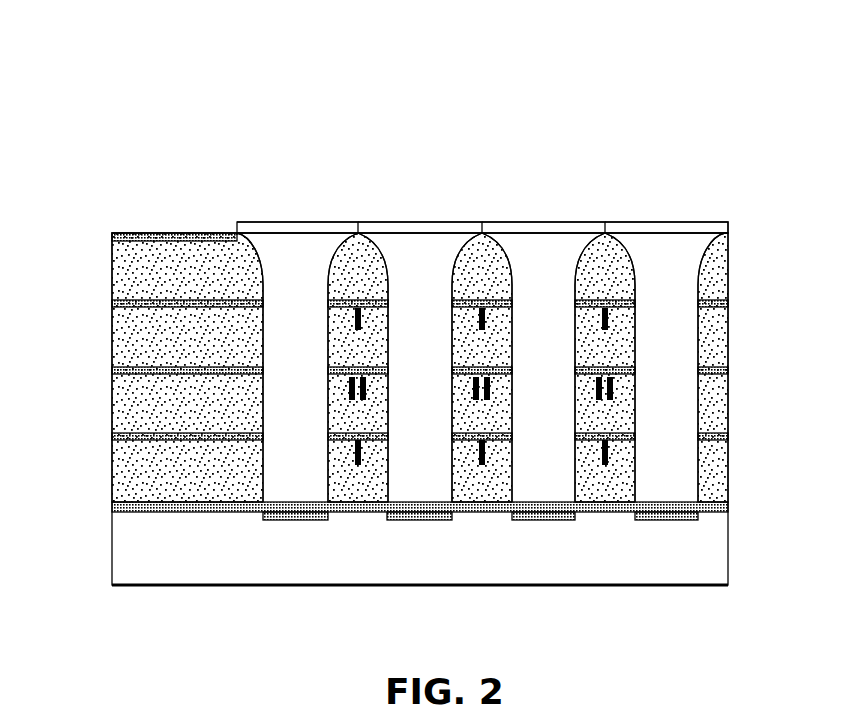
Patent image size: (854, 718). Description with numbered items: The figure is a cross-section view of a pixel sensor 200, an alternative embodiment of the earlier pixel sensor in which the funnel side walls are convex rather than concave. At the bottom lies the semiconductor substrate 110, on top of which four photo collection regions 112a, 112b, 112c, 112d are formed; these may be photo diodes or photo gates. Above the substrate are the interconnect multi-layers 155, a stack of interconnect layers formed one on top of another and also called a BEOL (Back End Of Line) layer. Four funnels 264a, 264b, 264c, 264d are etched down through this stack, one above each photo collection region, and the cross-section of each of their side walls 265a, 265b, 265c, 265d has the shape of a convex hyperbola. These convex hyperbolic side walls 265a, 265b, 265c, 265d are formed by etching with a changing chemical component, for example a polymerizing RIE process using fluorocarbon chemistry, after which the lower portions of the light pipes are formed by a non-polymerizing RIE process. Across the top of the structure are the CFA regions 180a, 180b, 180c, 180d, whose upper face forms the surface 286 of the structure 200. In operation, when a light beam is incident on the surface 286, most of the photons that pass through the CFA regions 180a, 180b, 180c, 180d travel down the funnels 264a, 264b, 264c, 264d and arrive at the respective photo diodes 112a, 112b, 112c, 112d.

The pixel sensor 200 is at (682, 104).
The semiconductor substrate 110 is at (122, 541).
The photo collection region 112a is at (272, 520).
The photo collection region 112b is at (407, 520).
The photo collection region 112c is at (545, 520).
The photo collection region 112d is at (668, 520).
The interconnect multi-layers 155 is at (753, 233).
The surface 286 is at (257, 222).
The CFA region 180a is at (291, 228).
The CFA region 180b is at (417, 228).
The CFA region 180c is at (572, 228).
The CFA region 180d is at (690, 228).
The funnel 264a is at (320, 305).
The funnel 264b is at (443, 305).
The funnel 264c is at (567, 305).
The funnel 264d is at (691, 305).
The side wall 265a is at (334, 263).
The side wall 265b is at (462, 263).
The side wall 265c is at (508, 267).
The side wall 265d is at (630, 263).